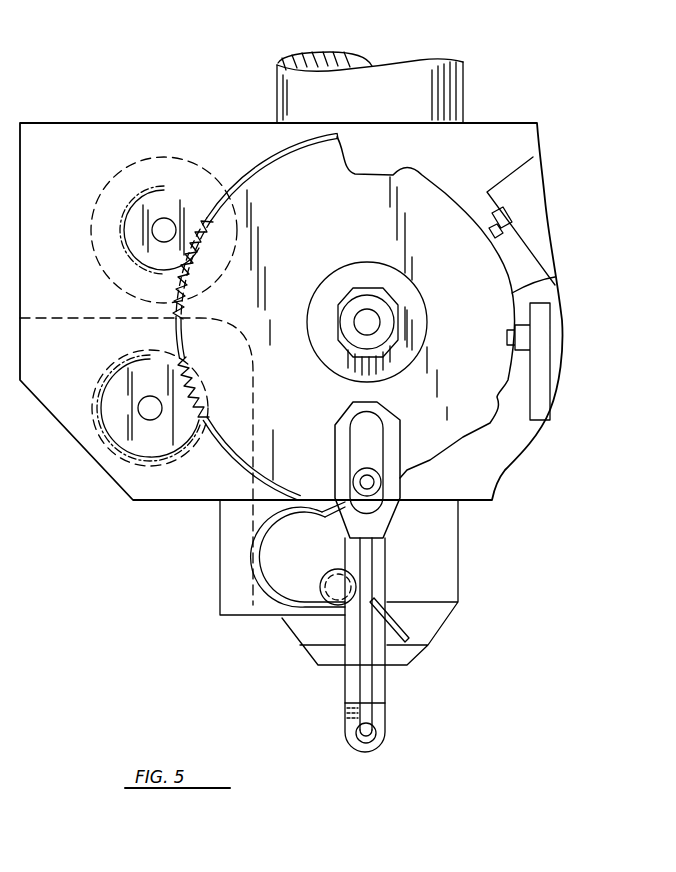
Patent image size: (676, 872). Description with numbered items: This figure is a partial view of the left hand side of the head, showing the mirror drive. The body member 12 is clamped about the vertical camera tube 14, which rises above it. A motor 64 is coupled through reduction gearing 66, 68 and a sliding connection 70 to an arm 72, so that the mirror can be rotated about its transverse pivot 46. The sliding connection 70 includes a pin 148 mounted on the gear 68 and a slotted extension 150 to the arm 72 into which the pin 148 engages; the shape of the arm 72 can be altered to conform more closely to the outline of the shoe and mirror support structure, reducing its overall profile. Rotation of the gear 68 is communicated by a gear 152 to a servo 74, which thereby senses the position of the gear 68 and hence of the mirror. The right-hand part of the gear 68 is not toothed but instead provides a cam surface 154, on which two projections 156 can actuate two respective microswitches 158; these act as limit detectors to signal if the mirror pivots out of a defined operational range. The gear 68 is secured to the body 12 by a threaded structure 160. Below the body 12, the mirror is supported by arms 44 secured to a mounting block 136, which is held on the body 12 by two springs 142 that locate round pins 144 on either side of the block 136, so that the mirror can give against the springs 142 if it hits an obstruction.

The body member 12 is at (488, 145).
The camera tube 14 is at (366, 80).
The arms 44 is at (385, 690).
The transverse pivot 46 is at (380, 740).
The motor 64 is at (164, 157).
The reduction gear 66 is at (150, 205).
The gear 68 is at (272, 185).
The sliding connection 70 is at (396, 456).
The arm 72 is at (345, 692).
The servo 74 is at (118, 375).
The mounting block 136 is at (218, 546).
The springs 142 is at (250, 608).
The pins 144 is at (335, 580).
The pin 148 is at (362, 480).
The slotted extension 150 is at (337, 434).
The gear 152 is at (120, 430).
The cam surface 154 is at (552, 280).
The projections 156 is at (432, 172).
The microswitches 158 is at (522, 195).
The threaded structure 160 is at (367, 300).